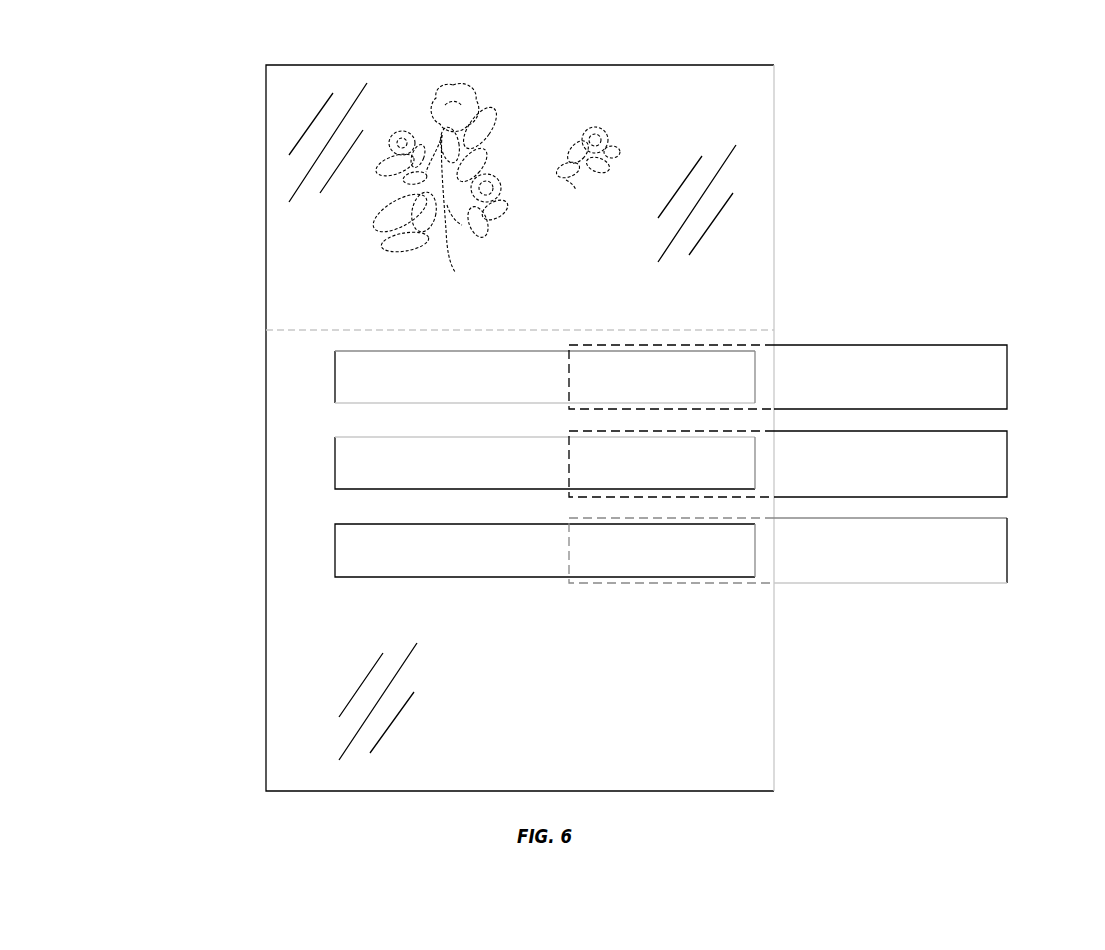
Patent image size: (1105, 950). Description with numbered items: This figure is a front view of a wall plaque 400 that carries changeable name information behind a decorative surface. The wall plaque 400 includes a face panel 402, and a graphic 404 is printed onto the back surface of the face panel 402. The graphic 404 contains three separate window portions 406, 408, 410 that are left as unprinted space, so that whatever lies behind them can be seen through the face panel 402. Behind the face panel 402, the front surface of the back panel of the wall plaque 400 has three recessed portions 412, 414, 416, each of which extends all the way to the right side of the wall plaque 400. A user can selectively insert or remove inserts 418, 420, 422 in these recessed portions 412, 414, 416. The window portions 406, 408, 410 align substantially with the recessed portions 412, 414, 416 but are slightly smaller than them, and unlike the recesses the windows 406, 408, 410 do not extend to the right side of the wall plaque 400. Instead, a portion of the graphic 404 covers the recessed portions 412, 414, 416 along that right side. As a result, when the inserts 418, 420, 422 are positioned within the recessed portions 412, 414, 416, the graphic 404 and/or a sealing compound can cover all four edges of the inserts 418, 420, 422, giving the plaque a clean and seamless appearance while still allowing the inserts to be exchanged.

The wall plaque 400 is at (152, 112).
The face panel 402 is at (750, 126).
The graphic 404 is at (439, 87).
The window portion 406 is at (335, 365).
The window portion 408 is at (335, 452).
The window portion 410 is at (335, 539).
The recessed portion 412 is at (358, 383).
The recessed portion 414 is at (358, 467).
The recessed portion 416 is at (358, 555).
The insert 418 is at (988, 376).
The insert 420 is at (988, 463).
The insert 422 is at (988, 550).